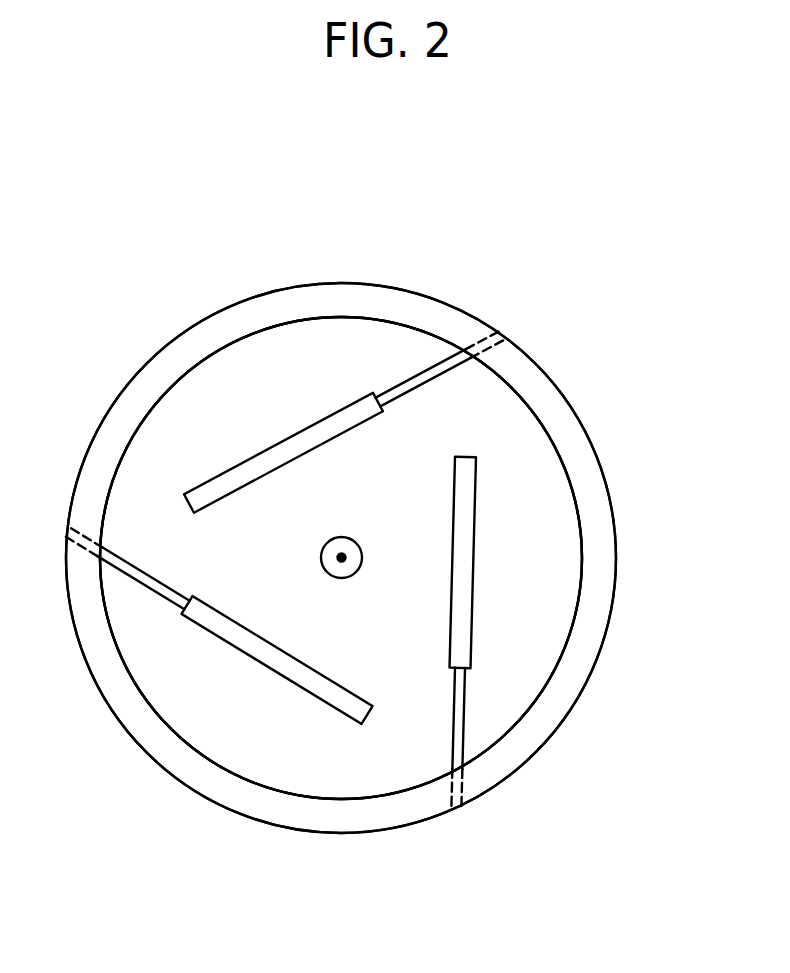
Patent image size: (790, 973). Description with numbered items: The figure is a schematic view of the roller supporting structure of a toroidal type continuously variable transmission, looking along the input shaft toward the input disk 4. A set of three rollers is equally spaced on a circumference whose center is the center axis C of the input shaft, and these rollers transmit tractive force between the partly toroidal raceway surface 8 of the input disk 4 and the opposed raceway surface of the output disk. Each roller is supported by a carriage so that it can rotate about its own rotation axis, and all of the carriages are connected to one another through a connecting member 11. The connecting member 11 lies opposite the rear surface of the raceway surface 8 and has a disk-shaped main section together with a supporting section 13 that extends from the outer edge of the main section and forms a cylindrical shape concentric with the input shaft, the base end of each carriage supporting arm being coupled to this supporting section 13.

The input disk 4 is at (577, 508).
The raceway surface 8 is at (497, 423).
The connecting member 11 is at (618, 557).
The supporting section 13 is at (572, 427).
The center axis C is at (341, 557).